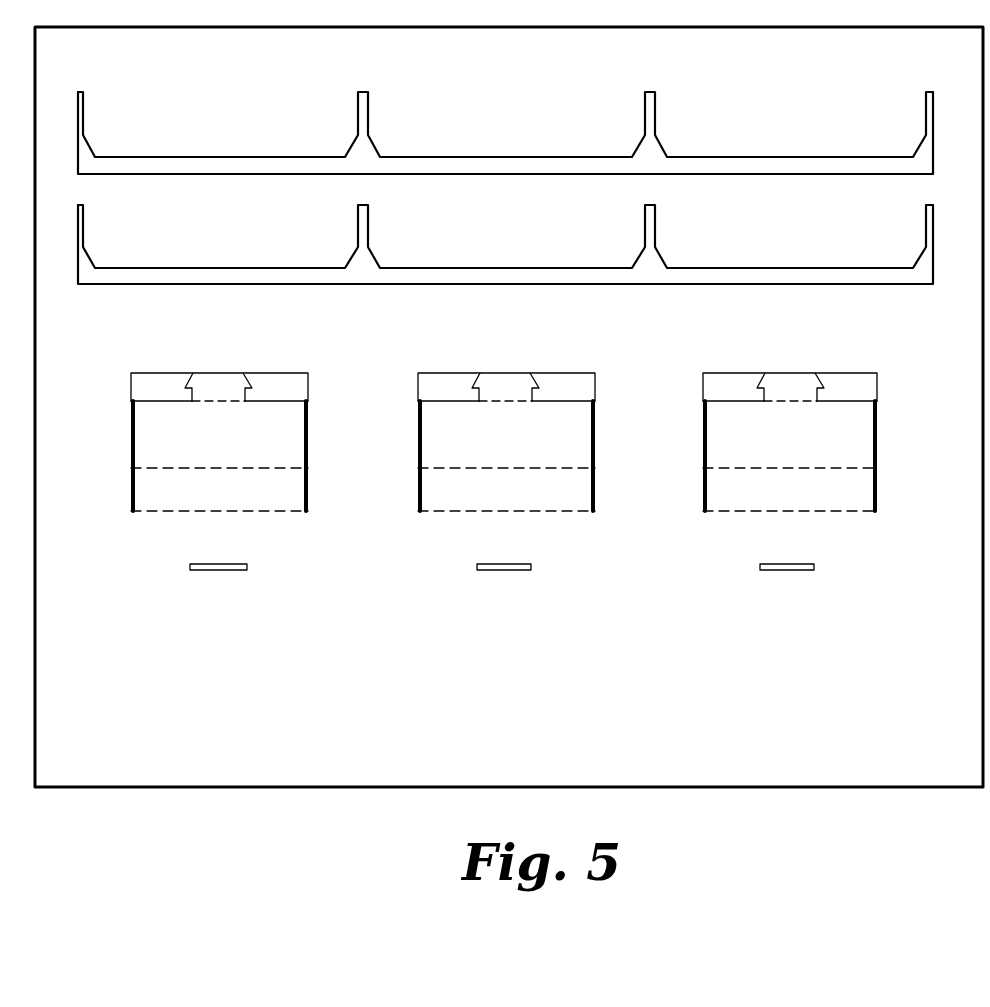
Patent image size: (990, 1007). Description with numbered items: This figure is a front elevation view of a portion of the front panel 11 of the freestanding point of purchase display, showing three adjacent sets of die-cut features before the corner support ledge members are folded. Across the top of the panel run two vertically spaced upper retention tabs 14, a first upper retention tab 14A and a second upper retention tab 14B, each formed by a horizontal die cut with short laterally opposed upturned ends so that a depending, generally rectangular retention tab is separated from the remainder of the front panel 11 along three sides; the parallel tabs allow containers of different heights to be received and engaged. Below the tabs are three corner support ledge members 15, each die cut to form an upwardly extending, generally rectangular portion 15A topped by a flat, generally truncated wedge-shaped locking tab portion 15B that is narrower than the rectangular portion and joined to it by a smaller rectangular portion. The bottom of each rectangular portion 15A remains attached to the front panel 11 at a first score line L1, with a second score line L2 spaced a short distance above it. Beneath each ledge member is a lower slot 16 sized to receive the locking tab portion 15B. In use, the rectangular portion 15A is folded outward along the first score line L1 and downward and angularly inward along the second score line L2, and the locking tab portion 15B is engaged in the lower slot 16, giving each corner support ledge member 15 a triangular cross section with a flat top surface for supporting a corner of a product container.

The front panel 11 is at (533, 708).
The upper retention tab 14 is at (505, 221).
The first upper retention tab 14A is at (135, 268).
The second upper retention tab 14B is at (218, 159).
The corner support ledge member 15 is at (143, 446).
The rectangular portion 15A is at (240, 455).
The locking tab portion 15B is at (218, 382).
The lower slot 16 is at (217, 571).
The first score line L1 is at (240, 513).
The second score line L2 is at (282, 468).